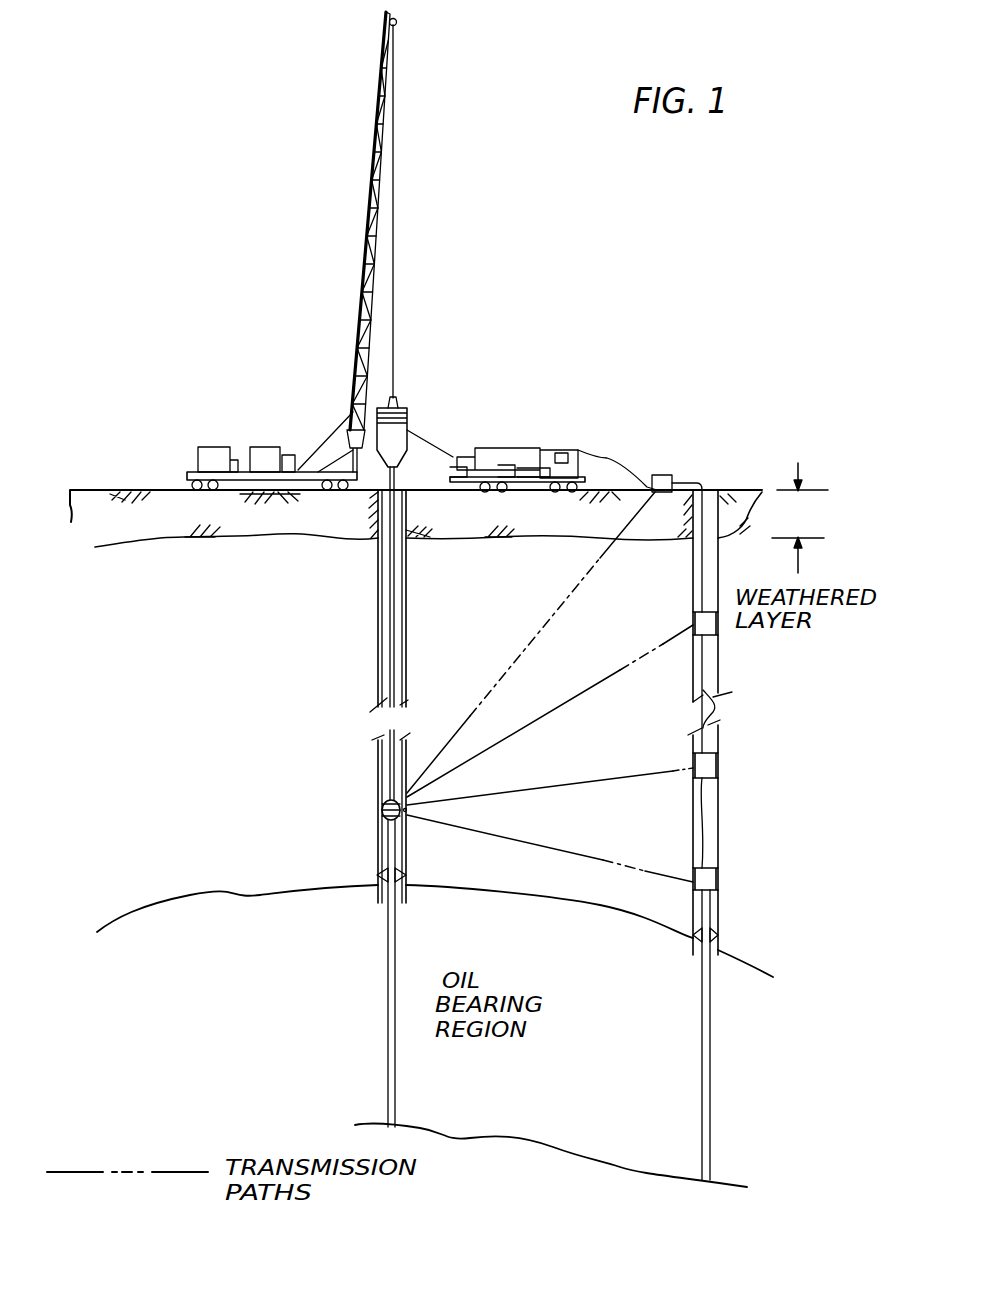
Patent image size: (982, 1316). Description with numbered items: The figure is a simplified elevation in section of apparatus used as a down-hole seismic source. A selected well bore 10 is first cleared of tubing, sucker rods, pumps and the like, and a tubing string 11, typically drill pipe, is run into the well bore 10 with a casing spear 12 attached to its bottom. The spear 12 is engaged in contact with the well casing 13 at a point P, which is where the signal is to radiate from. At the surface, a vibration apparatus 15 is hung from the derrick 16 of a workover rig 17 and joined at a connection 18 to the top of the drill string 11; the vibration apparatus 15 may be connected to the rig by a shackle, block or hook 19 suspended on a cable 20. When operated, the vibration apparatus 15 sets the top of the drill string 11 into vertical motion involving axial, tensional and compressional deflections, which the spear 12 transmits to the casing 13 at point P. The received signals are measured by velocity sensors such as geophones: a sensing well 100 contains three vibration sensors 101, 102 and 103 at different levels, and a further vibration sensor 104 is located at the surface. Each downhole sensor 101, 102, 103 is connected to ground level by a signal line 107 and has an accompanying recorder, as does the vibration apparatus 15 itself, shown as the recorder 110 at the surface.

The well bore 10 is at (406, 513).
The tubing string 11 is at (402, 612).
The casing spear 12 is at (382, 805).
The point P is at (382, 813).
The well casing 13 is at (380, 843).
The vibration apparatus 15 is at (420, 404).
The derrick 16 is at (372, 145).
The workover rig 17 is at (290, 455).
The connection 18 is at (398, 478).
The shackle or block or hook 19 is at (393, 397).
The cable 20 is at (395, 258).
The sensing well 100 is at (710, 910).
The vibration sensor 101 is at (693, 618).
The vibration sensor 102 is at (700, 767).
The vibration sensor 103 is at (700, 880).
The vibration sensor 104 is at (667, 475).
The signal line 107 is at (720, 713).
The recorder 110 is at (558, 450).